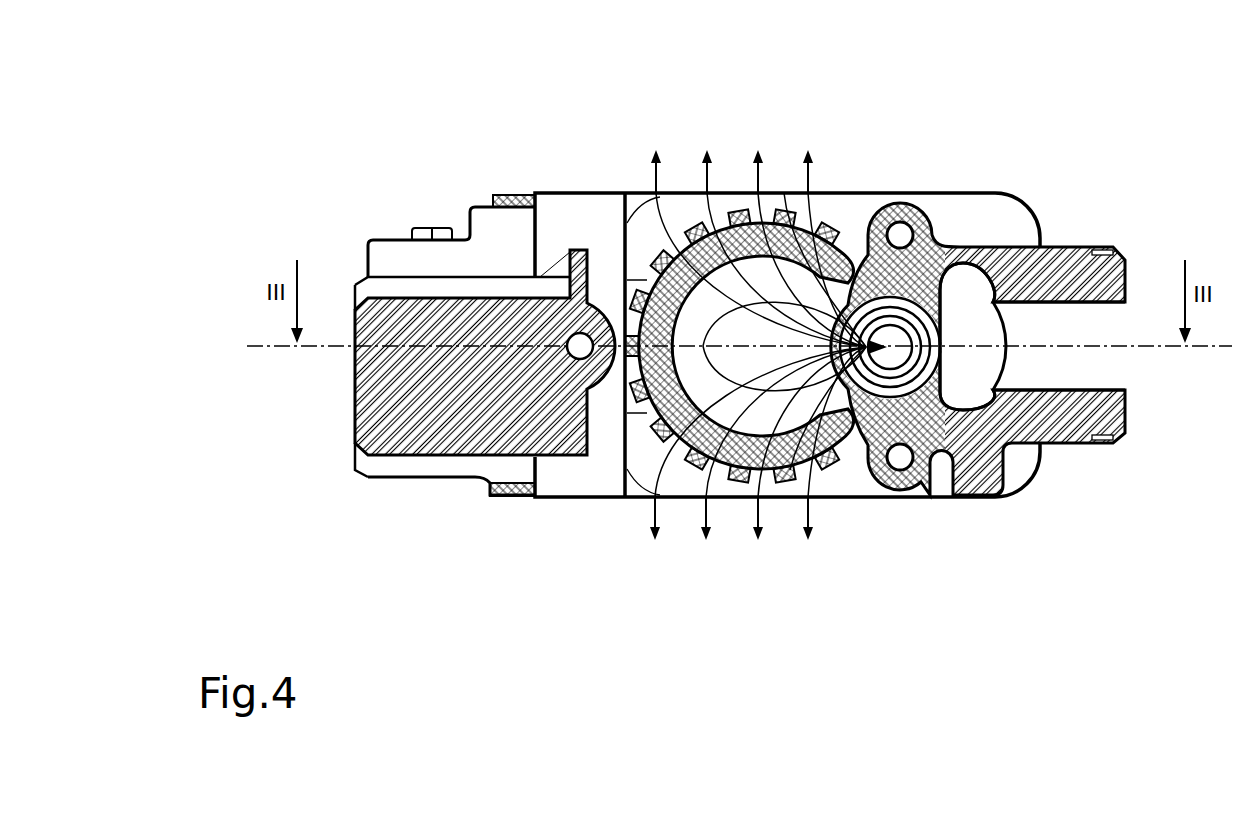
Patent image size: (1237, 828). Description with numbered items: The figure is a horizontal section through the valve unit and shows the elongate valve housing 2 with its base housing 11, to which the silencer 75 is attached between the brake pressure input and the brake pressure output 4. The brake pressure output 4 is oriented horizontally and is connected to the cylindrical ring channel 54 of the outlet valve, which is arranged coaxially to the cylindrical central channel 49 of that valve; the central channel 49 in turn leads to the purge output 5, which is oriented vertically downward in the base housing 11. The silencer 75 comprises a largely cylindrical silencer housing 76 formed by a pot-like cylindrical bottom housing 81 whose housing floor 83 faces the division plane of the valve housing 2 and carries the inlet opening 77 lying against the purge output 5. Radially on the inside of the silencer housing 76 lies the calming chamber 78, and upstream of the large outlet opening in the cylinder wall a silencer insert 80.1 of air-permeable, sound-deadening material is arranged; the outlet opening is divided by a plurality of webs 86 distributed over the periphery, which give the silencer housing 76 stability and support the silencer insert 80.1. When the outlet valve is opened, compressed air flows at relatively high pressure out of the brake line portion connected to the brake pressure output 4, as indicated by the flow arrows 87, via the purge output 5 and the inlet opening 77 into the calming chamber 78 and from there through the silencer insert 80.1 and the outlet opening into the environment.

The valve housing 2 is at (405, 345).
The base housing 11 is at (455, 380).
The brake pressure output 4 is at (1045, 360).
The purge output 5 is at (915, 494).
The central channel 49 is at (895, 360).
The ring channel 54 is at (967, 303).
The silencer 75 is at (681, 548).
The silencer housing 76 is at (865, 485).
The bottom housing 81 is at (848, 458).
The inlet opening 77 is at (913, 267).
The calming chamber 78 is at (747, 358).
The silencer insert 80.1 is at (630, 415).
The housing floor 83 is at (858, 295).
The webs 86 is at (784, 193).
The flow arrows 87 is at (658, 180).